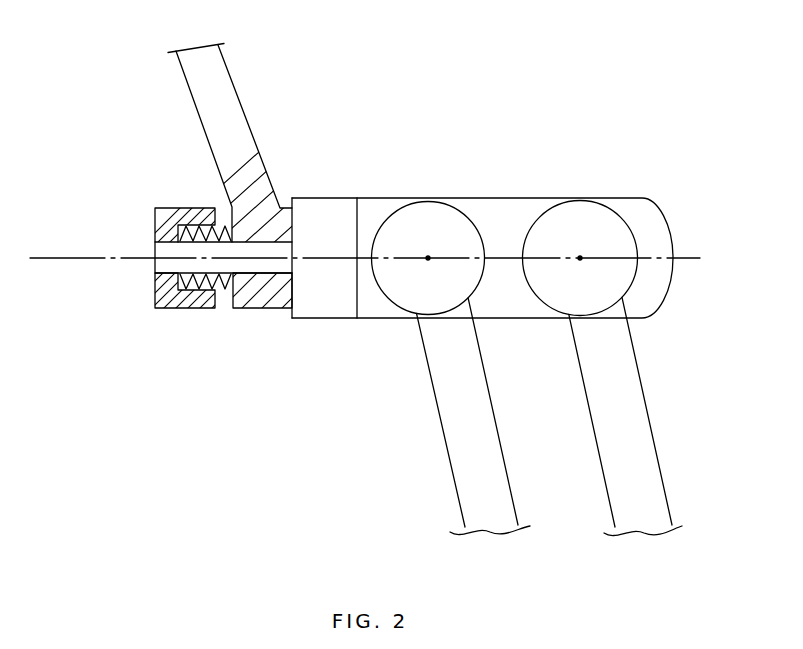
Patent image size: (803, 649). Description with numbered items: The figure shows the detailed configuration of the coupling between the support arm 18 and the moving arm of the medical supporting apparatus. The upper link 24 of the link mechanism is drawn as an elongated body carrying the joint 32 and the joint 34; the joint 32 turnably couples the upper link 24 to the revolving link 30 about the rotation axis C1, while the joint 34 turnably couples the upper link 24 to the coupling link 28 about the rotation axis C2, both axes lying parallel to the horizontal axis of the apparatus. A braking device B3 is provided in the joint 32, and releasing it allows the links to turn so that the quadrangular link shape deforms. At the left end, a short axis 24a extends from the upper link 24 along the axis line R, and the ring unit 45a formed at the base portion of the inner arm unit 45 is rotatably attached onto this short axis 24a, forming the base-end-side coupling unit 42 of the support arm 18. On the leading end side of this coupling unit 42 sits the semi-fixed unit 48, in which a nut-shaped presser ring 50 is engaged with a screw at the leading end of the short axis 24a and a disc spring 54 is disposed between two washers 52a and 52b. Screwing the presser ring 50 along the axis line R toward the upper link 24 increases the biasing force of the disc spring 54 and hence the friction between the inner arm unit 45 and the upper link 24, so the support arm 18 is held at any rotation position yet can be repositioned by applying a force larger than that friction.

The support arm 18 is at (250, 45).
The inner arm unit 45 is at (244, 114).
The ring unit 45a is at (254, 302).
The upper link 24 is at (519, 206).
The short axis 24a is at (283, 200).
The coupling link 28 is at (645, 421).
The revolving link 30 is at (493, 421).
The joint 32 is at (408, 304).
The joint 34 is at (557, 304).
The braking device B3 is at (430, 208).
The rotation axis C1 is at (429, 260).
The rotation axis C2 is at (581, 260).
The base-end-side coupling unit 42 is at (260, 378).
The semi-fixed unit 48 is at (158, 324).
The presser ring 50 is at (154, 302).
The washer 52a is at (228, 226).
The washer 52b is at (178, 230).
The disc spring 54 is at (197, 309).
The axis line R is at (45, 262).